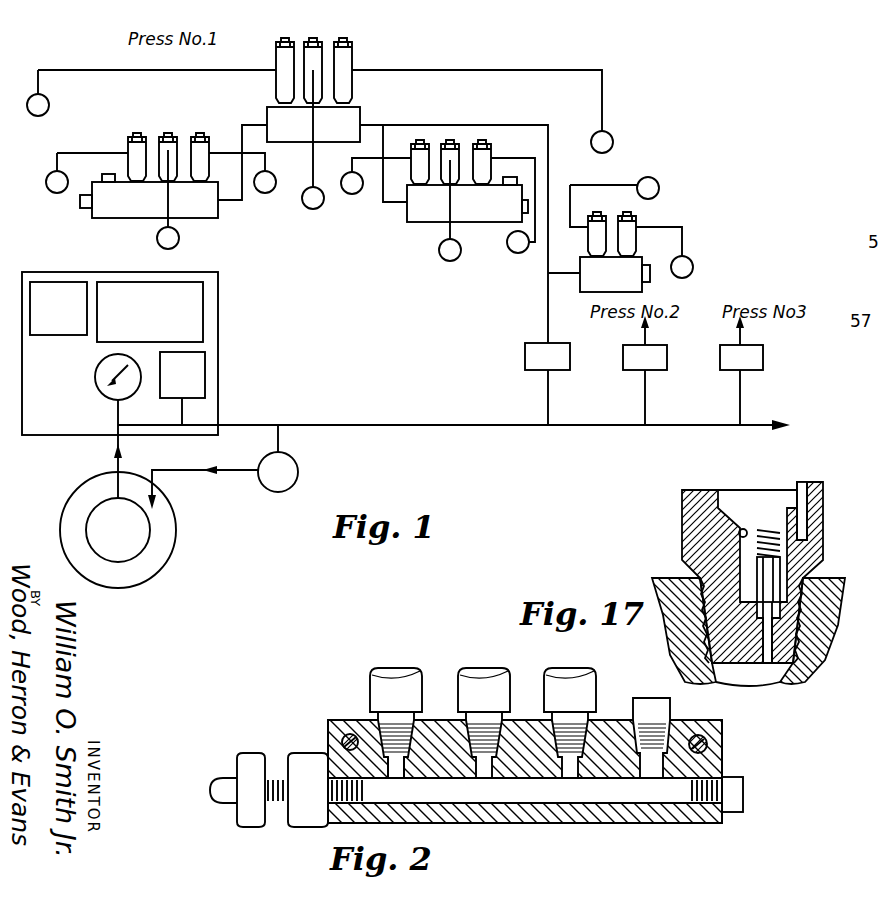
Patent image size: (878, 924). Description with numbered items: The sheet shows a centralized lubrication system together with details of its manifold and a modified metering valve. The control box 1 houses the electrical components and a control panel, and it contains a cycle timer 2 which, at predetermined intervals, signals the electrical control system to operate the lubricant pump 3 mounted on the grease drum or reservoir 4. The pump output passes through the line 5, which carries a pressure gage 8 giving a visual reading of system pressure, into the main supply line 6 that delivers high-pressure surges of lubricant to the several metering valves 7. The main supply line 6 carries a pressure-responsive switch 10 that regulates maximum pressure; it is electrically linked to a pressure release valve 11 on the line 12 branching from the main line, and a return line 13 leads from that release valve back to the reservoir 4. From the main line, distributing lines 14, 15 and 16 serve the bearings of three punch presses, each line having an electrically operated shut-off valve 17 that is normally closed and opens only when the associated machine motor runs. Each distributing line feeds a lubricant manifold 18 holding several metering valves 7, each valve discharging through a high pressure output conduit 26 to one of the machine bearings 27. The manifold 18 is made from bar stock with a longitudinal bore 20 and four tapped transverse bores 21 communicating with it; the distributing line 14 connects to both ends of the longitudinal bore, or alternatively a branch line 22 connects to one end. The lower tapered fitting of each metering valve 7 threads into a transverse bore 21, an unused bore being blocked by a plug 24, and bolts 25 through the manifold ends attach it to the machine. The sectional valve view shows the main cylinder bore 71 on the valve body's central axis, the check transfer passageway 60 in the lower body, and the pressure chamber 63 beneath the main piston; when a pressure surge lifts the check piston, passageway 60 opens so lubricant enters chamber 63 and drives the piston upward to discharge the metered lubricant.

In FIG. 1, the control box 1 is at (235, 340).
In FIG. 1, the cycle timer 2 is at (195, 300).
In FIG. 1, the lubricant pump 3 is at (150, 530).
In FIG. 1, the reservoir 4 is at (170, 553).
In FIG. 1, the conduit or line 5 is at (117, 463).
In FIG. 1, the main supply line 6 is at (417, 425).
In FIG. 1, the metering valve 7 is at (120, 138).
In FIG. 2, the metering valve 7 is at (432, 671).
In FIG. 1, the pressure gage 8 is at (95, 377).
In FIG. 1, the pressure-responsive switch 10 is at (205, 378).
In FIG. 1, the pressure release valve 11 is at (298, 470).
In FIG. 1, the line 12 is at (278, 438).
In FIG. 1, the return line 13 is at (247, 470).
In FIG. 1, the distributing line 14 is at (441, 125).
In FIG. 1, the distributing line 15 is at (645, 404).
In FIG. 1, the distributing line 16 is at (740, 406).
In FIG. 1, the shut-off valve 17 is at (525, 353).
In FIG. 1, the lubricant manifold 18 is at (392, 90).
In FIG. 2, the lubricant manifold 18 is at (345, 720).
In FIG. 2, the longitudinal bore 20 is at (622, 794).
In FIG. 2, the transverse bore 21 is at (570, 780).
In FIG. 1, the branch line 22 is at (243, 124).
In FIG. 2, the plug 24 is at (665, 712).
In FIG. 2, the bolt 25 is at (708, 738).
In FIG. 1, the high pressure output conduit 26 is at (460, 70).
In FIG. 1, the bearing 27 is at (180, 238).
In FIG. 17, the check transfer passageway 60 is at (739, 534).
In FIG. 17, the pressure chamber 63 is at (770, 520).
In FIG. 17, the main cylinder bore 71 is at (777, 490).